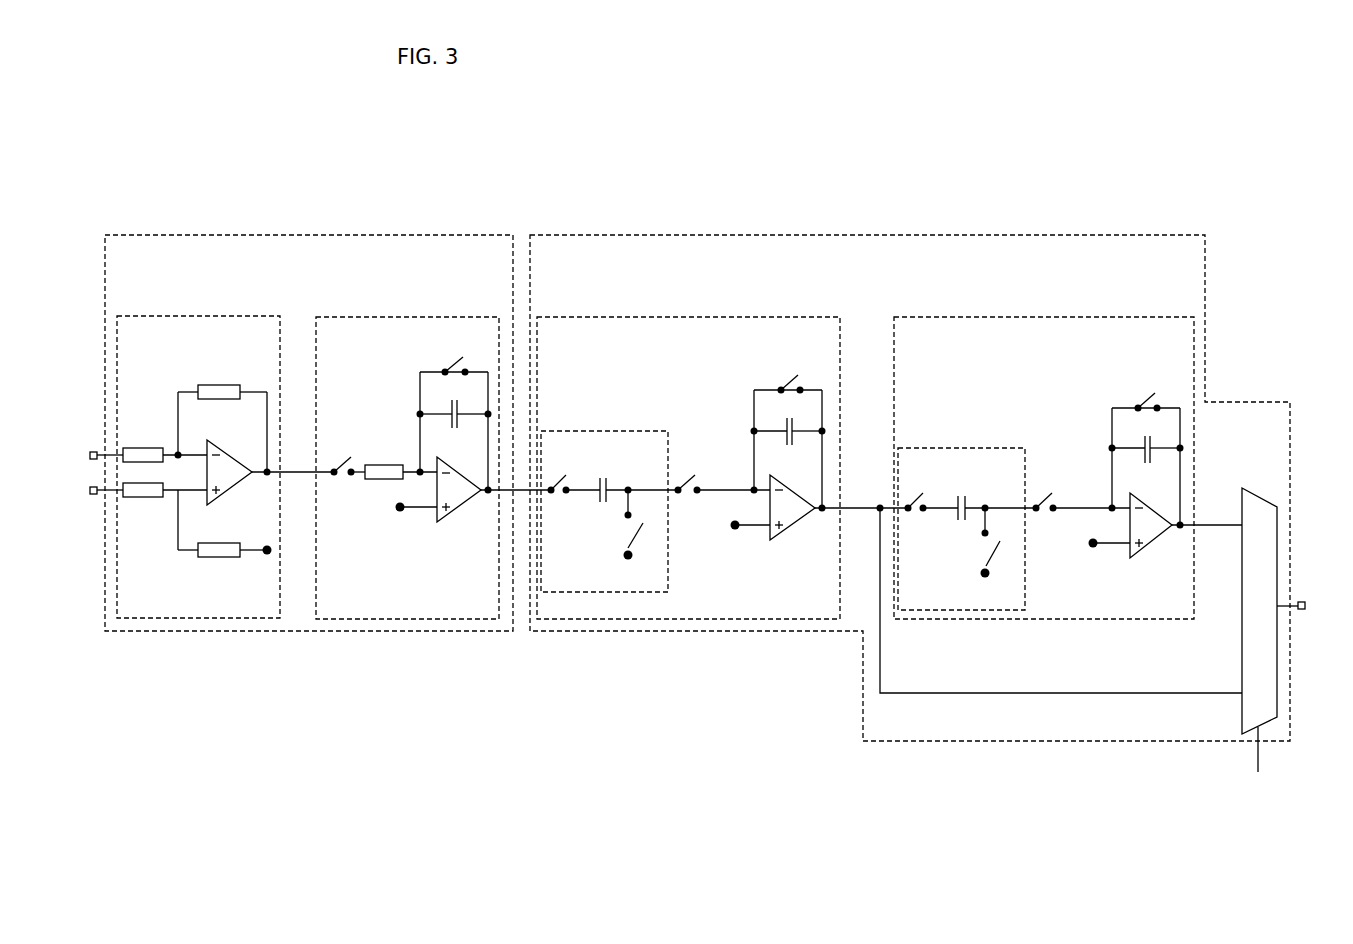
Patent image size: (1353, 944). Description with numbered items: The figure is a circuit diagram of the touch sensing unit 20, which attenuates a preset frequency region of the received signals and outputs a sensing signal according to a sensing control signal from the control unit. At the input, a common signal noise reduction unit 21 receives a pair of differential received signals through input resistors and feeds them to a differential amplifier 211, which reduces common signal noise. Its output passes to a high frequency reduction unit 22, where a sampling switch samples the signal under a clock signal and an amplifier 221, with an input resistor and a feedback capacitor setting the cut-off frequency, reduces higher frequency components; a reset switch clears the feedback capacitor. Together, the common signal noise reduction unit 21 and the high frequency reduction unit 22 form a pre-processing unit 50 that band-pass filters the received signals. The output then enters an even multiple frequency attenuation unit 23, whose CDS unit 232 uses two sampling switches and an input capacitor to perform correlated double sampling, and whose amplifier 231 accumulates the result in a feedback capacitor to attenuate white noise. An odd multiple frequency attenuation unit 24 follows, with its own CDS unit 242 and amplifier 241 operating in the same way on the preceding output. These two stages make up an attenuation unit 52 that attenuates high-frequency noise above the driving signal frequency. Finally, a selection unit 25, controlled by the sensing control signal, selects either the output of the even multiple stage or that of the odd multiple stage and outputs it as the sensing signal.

The touch sensing unit 20 is at (1252, 157).
The pre-processing unit 50 is at (303, 235).
The attenuation unit 52 is at (727, 235).
The common signal noise reduction unit 21 is at (228, 316).
The high frequency reduction unit 22 is at (408, 317).
The even multiple frequency attenuation unit 23 is at (714, 317).
The odd multiple frequency attenuation unit 24 is at (1046, 317).
The selection unit 25 is at (1258, 490).
The differential amplifier 211 is at (232, 455).
The amplifier 221 is at (452, 510).
The amplifier 231 is at (790, 528).
The CDS unit 232 is at (605, 431).
The amplifier 241 is at (1150, 545).
The CDS unit 242 is at (960, 448).